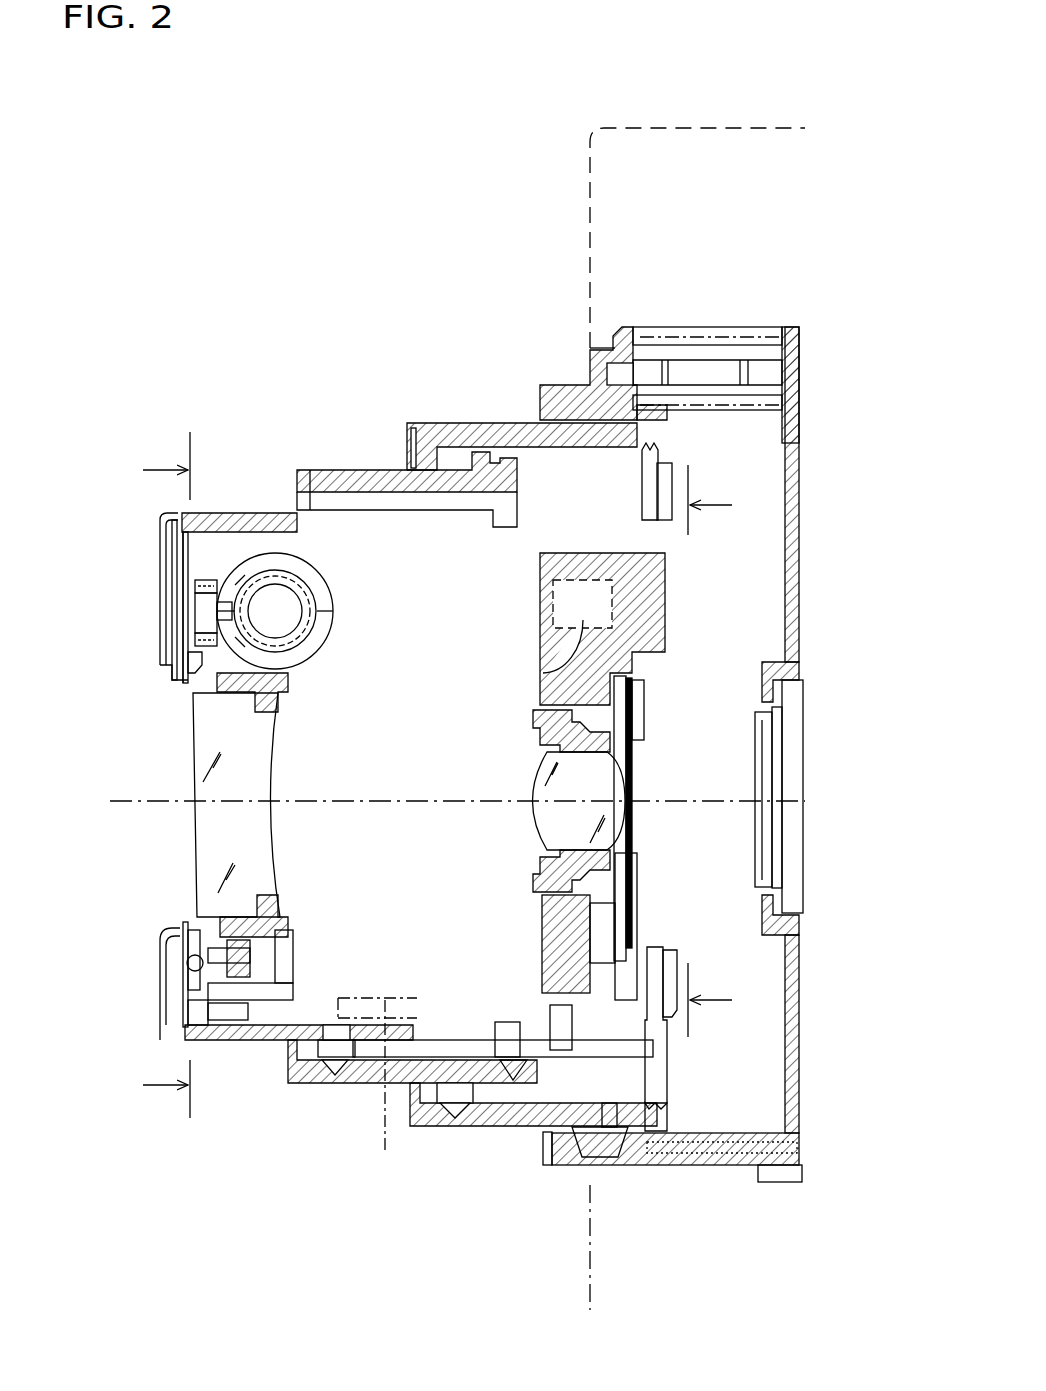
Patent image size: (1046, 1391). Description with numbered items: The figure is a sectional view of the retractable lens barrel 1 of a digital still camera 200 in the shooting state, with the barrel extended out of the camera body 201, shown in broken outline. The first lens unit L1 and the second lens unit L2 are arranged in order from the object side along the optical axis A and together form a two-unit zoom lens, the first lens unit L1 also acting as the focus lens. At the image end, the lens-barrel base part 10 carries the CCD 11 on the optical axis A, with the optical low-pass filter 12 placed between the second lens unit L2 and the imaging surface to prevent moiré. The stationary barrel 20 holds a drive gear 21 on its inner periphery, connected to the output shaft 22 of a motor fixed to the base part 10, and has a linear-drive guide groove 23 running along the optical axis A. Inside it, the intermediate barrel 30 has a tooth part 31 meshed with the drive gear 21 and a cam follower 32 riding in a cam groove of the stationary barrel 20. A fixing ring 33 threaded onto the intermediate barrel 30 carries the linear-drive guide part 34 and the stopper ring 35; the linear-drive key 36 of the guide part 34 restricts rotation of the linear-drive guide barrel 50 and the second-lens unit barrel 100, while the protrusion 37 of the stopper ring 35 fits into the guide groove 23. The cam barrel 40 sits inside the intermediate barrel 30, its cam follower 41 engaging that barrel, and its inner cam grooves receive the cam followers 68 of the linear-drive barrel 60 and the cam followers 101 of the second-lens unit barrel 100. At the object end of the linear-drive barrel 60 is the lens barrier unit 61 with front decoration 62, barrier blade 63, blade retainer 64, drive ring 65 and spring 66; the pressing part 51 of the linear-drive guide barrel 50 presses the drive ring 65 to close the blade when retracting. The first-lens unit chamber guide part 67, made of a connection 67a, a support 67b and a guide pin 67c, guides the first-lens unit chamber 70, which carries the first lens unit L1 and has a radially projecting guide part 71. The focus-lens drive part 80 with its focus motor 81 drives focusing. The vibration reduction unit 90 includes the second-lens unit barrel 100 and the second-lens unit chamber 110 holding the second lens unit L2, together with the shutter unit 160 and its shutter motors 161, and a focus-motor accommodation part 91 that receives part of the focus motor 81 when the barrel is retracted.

The lens barrel 1 is at (150, 365).
The lens-barrel base part 10 is at (792, 1003).
The charge-coupled device (CCD) 11 is at (792, 773).
The optical low-pass filter (LPF) 12 is at (763, 835).
The stationary barrel 20 is at (735, 1150).
The drive gear 21 is at (684, 362).
The output shaft 22 is at (788, 375).
The linear-drive guide groove 23 is at (797, 1147).
The intermediate barrel 30 is at (495, 445).
The tooth part 31 is at (662, 411).
The cam follower 32 is at (608, 1142).
The fixing ring 33 is at (655, 1130).
The linear-drive guide part 34 is at (655, 965).
The stopper ring 35 is at (672, 975).
The linear-drive key 36 is at (585, 1048).
The protrusion 37 is at (660, 1115).
The cam barrel 40 is at (350, 1070).
The cam follower 41 is at (455, 1110).
The linear-drive guide barrel 50 is at (360, 500).
The pressing part 51 is at (393, 1062).
The linear-drive barrel 60 is at (258, 1035).
The lens barrier unit 61 is at (164, 580).
The front decoration 62 is at (170, 607).
The barrier blade 63 is at (186, 648).
The blade retainer 64 is at (195, 667).
The drive ring 65 is at (222, 1040).
The spring 66 is at (193, 964).
The first-lens unit chamber guide part 67 is at (316, 929).
The connection 67a is at (284, 974).
The support 67b is at (283, 953).
The guide pin 67c is at (262, 923).
The cam followers 68 is at (333, 1070).
The first-lens unit chamber 70 is at (232, 682).
The guide part 71 is at (222, 1008).
The focus-lens drive part 80 is at (208, 573).
The focus motor 81 is at (262, 567).
The vibration reduction (VR) unit 90 is at (668, 617).
The focus-motor accommodation part 91 is at (545, 632).
The second-lens unit barrel 100 is at (533, 1045).
The cam followers 101 is at (510, 1063).
The second-lens unit chamber 110 is at (545, 722).
The shutter unit 160 is at (652, 689).
The shutter motors 161 is at (618, 607).
The digital still camera 200 is at (405, 178).
The camera body 201 is at (742, 127).
The optical axis A is at (446, 805).
The first lens unit L1 is at (210, 840).
The second lens unit L2 is at (540, 850).